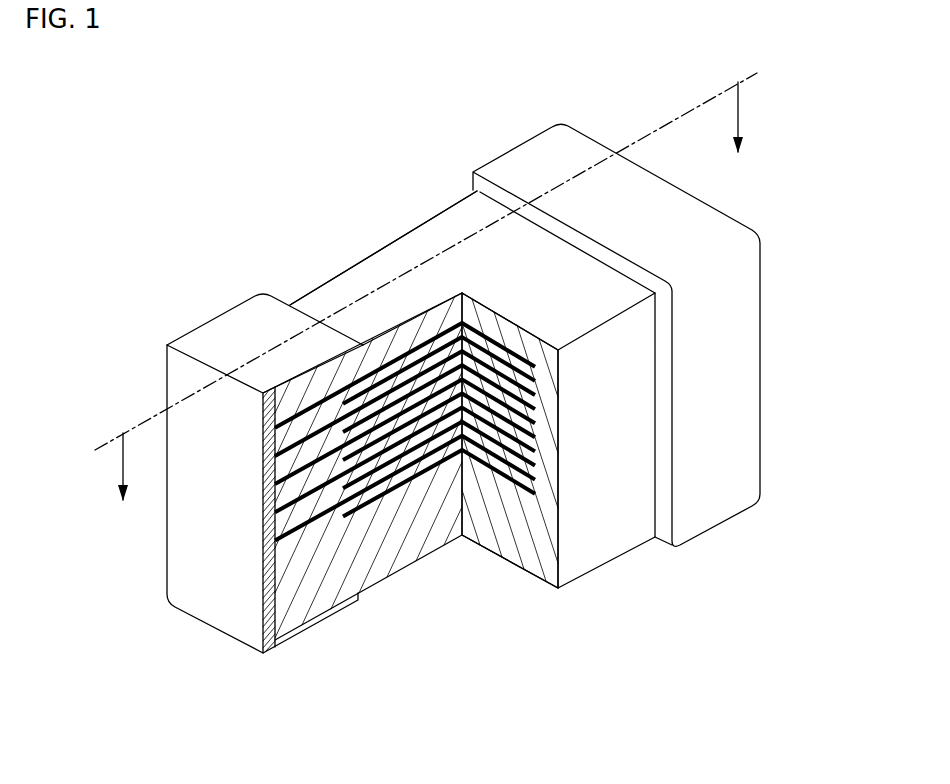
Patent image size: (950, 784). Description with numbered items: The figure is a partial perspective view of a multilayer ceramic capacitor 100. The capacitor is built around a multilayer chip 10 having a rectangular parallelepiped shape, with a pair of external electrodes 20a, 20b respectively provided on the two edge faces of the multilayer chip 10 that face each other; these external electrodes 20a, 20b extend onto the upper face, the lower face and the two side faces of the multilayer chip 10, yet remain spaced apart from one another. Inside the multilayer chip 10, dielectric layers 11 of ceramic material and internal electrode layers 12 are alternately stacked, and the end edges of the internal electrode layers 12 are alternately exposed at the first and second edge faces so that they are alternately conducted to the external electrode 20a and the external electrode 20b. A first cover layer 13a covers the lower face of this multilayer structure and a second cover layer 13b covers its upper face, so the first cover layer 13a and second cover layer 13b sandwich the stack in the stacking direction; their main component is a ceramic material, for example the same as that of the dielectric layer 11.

The multilayer ceramic capacitor 100 is at (862, 57).
The multilayer chip 10 is at (297, 287).
The dielectric layer 11 is at (383, 502).
The internal electrode layer 12 is at (350, 528).
The first cover layer 13a is at (521, 543).
The second cover layer 13b is at (432, 233).
The external electrode 20a is at (200, 327).
The external electrode 20b is at (518, 163).